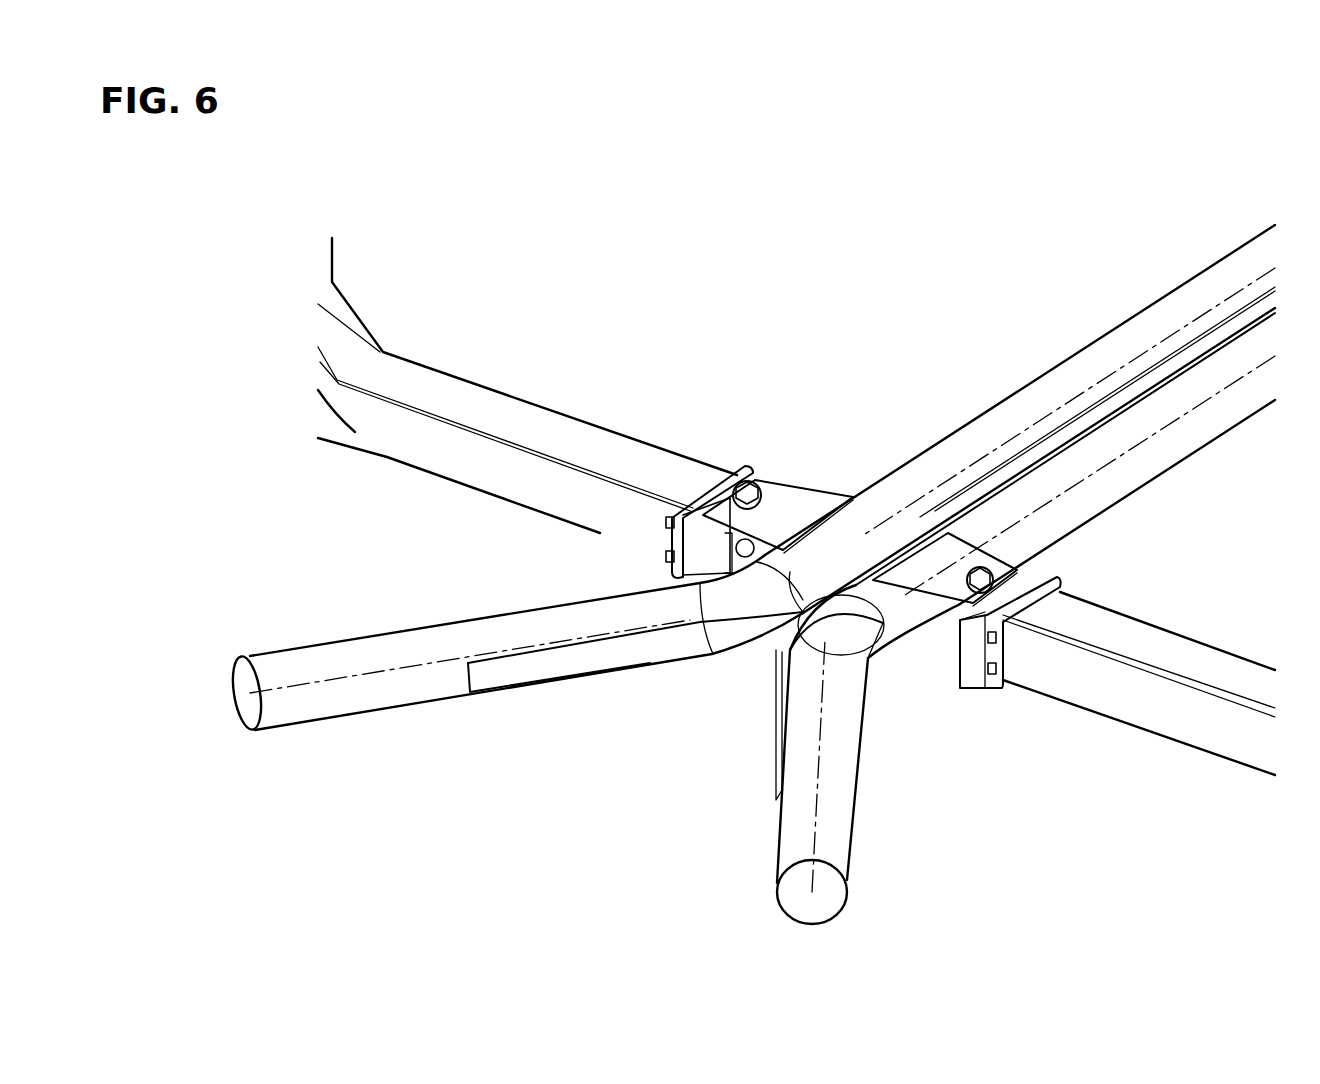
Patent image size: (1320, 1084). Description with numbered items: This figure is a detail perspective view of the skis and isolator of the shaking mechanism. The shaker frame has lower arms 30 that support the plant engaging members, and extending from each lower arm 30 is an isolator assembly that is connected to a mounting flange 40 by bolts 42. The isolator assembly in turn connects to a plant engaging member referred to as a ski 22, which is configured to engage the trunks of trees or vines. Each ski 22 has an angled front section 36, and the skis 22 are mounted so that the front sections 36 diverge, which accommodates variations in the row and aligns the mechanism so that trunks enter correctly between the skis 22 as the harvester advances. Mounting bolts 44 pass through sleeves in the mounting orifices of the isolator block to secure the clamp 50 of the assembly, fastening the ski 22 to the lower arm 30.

The ski 22 is at (1048, 392).
The lower arm 30 is at (483, 430).
The angled front section 36 is at (500, 638).
The mounting flange 40 is at (800, 512).
The bolt 42 is at (749, 487).
The mounting bolt 44 is at (665, 556).
The U-bolt bracket 50 is at (703, 550).